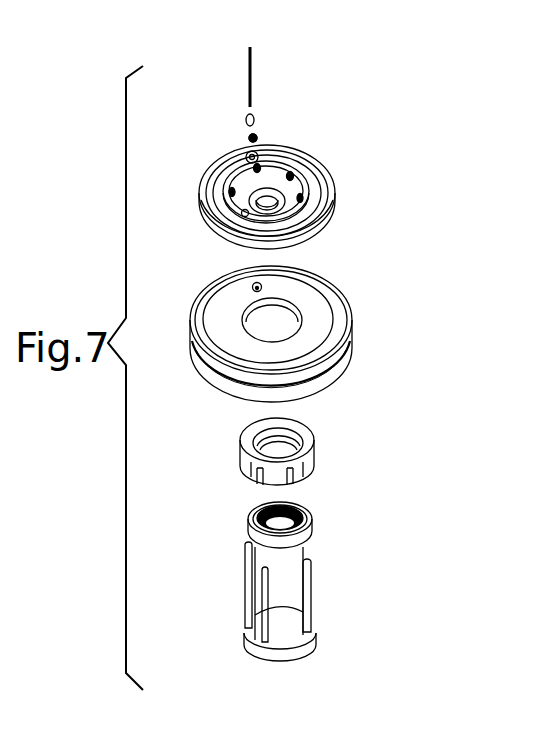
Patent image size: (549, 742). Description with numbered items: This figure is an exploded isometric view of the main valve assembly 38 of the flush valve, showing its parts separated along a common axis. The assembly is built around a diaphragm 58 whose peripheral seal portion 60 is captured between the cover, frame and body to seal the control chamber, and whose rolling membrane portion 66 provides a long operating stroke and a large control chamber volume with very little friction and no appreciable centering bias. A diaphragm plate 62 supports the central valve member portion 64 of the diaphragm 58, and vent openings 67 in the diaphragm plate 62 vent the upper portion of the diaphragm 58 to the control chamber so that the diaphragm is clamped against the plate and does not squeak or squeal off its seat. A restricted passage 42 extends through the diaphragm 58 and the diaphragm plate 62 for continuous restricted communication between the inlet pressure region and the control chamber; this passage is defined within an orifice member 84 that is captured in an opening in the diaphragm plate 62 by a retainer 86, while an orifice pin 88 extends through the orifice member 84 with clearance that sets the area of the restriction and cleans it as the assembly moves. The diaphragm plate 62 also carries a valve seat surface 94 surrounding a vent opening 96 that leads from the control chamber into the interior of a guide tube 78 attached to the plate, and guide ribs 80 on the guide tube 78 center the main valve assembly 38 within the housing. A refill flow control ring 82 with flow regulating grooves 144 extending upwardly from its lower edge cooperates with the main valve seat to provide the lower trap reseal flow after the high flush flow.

The main valve assembly 38 is at (343, 47).
The restricted passage 42 is at (249, 138).
The diaphragm 58 is at (280, 329).
The peripheral seal portion 60 is at (336, 375).
The diaphragm plate 62 is at (273, 195).
The central valve member portion 64 is at (312, 305).
The rolling membrane portion 66 is at (343, 320).
The vent openings 67 is at (229, 193).
The guide tube 78 is at (297, 568).
The guide ribs 80 is at (247, 582).
The refill flow control ring 82 is at (276, 466).
The orifice member 84 is at (258, 137).
The retainer 86 is at (256, 114).
The orifice pin 88 is at (252, 68).
The valve seat surface 94 is at (283, 213).
The vent opening 96 is at (238, 232).
The flow regulating grooves 144 is at (257, 485).